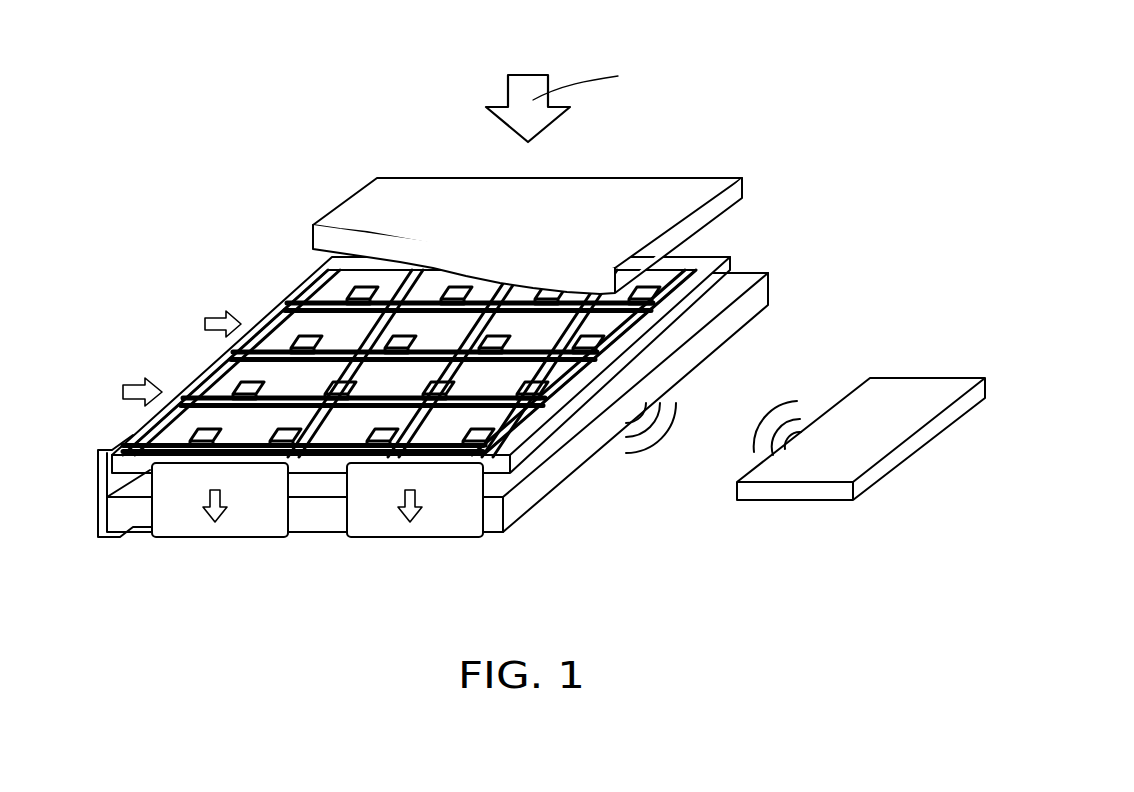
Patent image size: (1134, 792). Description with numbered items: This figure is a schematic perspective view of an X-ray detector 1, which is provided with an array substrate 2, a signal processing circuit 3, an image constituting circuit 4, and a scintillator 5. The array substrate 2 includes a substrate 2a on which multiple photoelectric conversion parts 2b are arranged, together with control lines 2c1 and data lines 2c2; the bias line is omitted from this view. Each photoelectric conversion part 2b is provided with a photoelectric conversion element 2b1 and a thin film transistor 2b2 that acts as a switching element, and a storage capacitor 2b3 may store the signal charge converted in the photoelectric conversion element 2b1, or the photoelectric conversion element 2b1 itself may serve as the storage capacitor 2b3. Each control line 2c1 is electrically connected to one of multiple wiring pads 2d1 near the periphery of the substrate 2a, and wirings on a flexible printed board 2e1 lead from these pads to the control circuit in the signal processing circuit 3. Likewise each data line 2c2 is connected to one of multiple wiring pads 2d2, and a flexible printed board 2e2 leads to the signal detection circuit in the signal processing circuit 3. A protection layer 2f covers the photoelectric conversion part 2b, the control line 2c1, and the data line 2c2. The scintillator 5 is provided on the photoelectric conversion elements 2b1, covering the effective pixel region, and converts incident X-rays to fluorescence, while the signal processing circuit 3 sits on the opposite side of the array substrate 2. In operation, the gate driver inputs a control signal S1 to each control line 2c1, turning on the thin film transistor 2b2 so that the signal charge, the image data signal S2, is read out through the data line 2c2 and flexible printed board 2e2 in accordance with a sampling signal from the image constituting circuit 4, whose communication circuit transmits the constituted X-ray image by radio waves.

The X-ray detector 1 is at (526, 324).
The array substrate 2 is at (450, 332).
The substrate 2a is at (727, 277).
The photoelectric conversion part 2b is at (425, 257).
The photoelectric conversion element 2b1 is at (333, 287).
The thin film transistor 2b2 is at (363, 293).
The storage capacitor 2b3 is at (472, 207).
The control line 2c1 is at (217, 437).
The data line 2c2 is at (202, 402).
The wiring pad 2d1 is at (270, 345).
The wiring pad 2d2 is at (297, 452).
The flexible printed board 2e1 is at (282, 303).
The flexible printed board 2e2 is at (180, 512).
The protection layer 2f is at (118, 439).
The signal processing circuit 3 is at (562, 465).
The image constituting circuit 4 is at (794, 490).
The scintillator 5 is at (673, 198).
The control signal S1 is at (212, 310).
The image data signal S2 is at (228, 500).